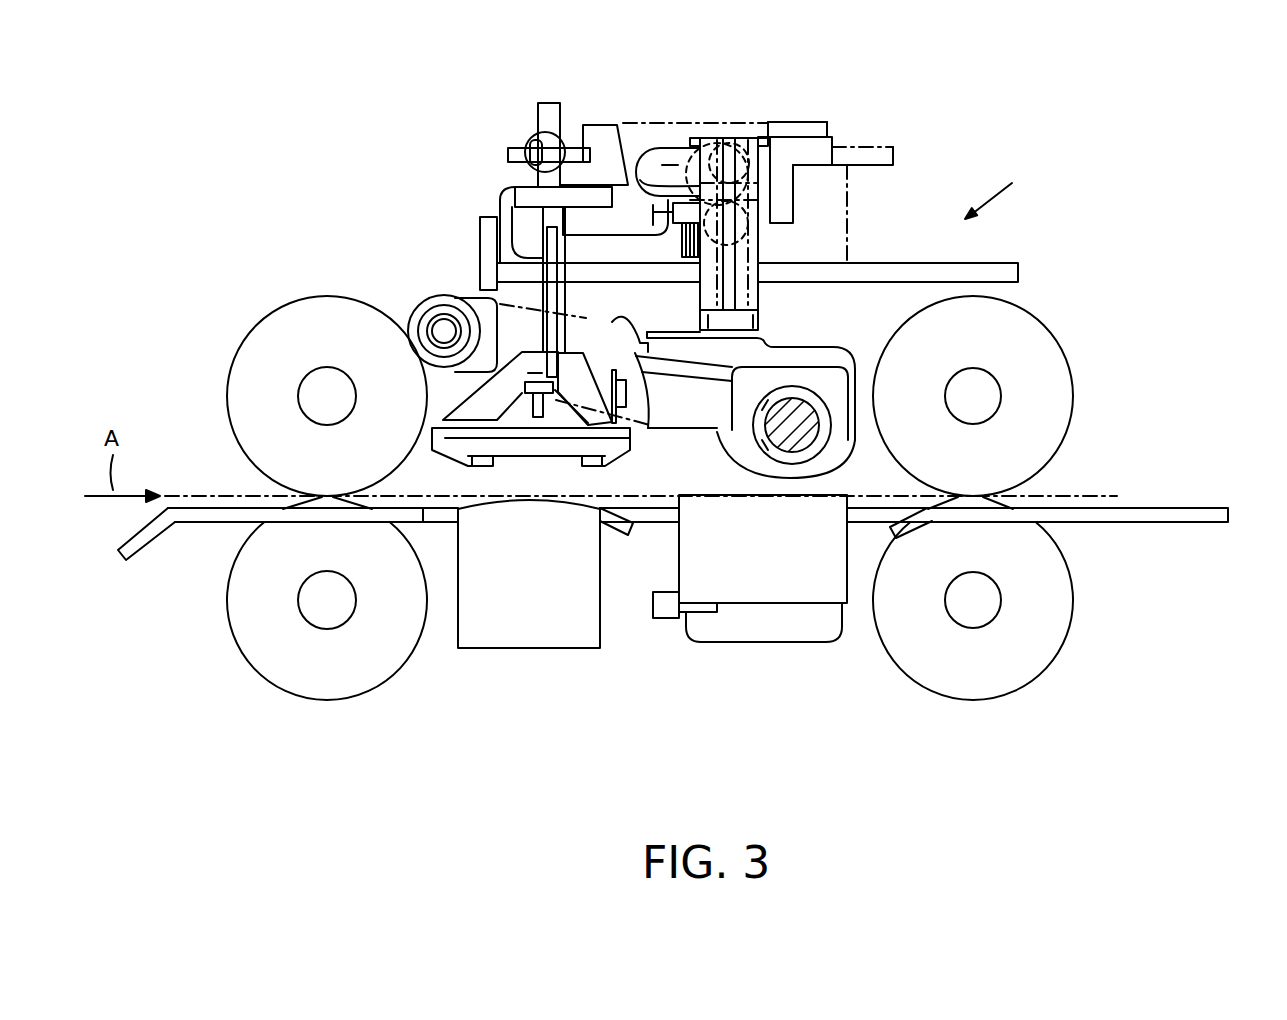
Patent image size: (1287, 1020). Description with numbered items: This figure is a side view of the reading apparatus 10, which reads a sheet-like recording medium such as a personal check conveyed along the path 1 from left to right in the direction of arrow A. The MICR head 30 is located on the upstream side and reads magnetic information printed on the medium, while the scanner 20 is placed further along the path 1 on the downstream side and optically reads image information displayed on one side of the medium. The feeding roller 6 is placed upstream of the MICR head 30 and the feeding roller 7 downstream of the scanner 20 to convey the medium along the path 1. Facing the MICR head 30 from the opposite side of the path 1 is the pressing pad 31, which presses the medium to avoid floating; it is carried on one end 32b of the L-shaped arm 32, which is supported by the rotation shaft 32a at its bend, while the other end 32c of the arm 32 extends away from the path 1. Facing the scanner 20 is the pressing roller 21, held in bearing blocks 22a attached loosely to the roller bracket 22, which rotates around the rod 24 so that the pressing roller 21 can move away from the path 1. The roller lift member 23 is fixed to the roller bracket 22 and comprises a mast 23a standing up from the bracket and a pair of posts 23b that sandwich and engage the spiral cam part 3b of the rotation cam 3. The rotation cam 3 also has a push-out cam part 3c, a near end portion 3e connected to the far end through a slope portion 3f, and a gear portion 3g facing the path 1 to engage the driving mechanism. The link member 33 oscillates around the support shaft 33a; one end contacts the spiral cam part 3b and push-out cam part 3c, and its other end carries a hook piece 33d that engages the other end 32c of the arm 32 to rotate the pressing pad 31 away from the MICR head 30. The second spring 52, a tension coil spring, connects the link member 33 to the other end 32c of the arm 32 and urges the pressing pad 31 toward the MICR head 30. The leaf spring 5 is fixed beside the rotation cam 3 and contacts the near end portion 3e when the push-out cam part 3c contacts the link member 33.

The path 1 is at (1085, 496).
The rotation cam 3 is at (795, 175).
The spiral cam part 3b is at (651, 139).
The push-out cam part 3c is at (827, 130).
The near end portion 3e is at (790, 200).
The slope portion 3f is at (670, 165).
The gear portion 3g is at (690, 256).
The leaf spring 5 is at (622, 215).
The feeding roller 6 is at (312, 298).
The feeding roller 7 is at (1058, 351).
The reading apparatus 10 is at (1005, 189).
The scanner 20 is at (780, 598).
The pressing roller 21 is at (853, 458).
The roller bracket 22 is at (757, 343).
The bearing block 22a is at (843, 412).
The roller lift member 23 is at (730, 129).
The mast 23a is at (752, 140).
The post 23b is at (694, 195).
The rod 24 is at (445, 330).
The MICR head 30 is at (557, 635).
The pressing pad 31 is at (632, 442).
The arm 32 is at (533, 247).
The rotation shaft 32a is at (627, 393).
The one end of the arm 32b is at (572, 352).
The other end of the arm 32c is at (549, 103).
The link member 33 is at (600, 117).
The support shaft 33a is at (806, 122).
The hook piece 33d is at (520, 195).
The second spring 52 is at (535, 138).